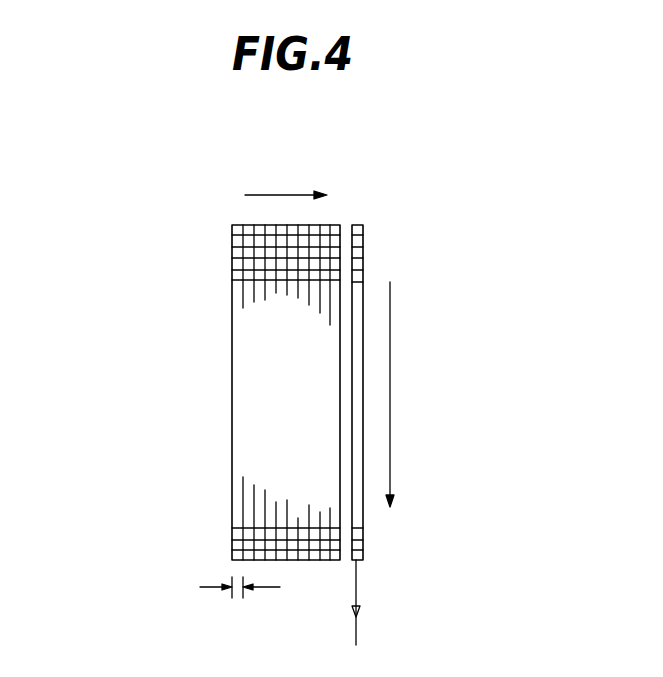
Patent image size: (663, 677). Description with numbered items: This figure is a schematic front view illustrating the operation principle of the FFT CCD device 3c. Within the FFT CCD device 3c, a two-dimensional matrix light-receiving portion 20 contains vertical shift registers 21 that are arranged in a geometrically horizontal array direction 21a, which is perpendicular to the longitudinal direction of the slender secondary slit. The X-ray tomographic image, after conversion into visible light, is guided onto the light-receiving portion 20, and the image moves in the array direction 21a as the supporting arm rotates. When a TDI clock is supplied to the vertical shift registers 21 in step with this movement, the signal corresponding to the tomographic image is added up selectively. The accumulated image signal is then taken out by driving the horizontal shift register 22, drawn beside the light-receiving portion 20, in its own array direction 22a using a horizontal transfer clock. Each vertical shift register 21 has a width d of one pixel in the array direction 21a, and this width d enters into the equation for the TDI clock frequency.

The FFT CCD device 3c is at (168, 269).
The light-receiving portion 20 is at (237, 391).
The vertical shift registers 21 is at (233, 231).
The array direction 21a is at (263, 195).
The horizontal shift register 22 is at (358, 225).
The array direction 22a is at (390, 387).
The width d is at (253, 589).